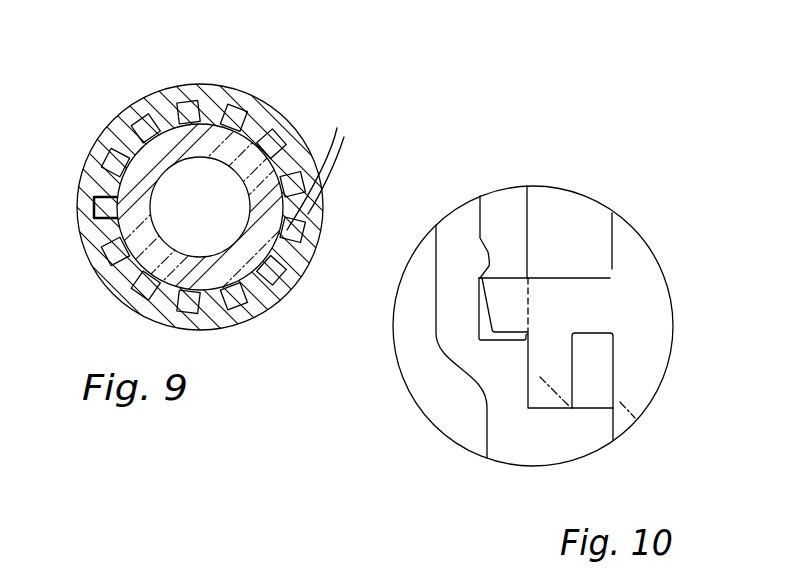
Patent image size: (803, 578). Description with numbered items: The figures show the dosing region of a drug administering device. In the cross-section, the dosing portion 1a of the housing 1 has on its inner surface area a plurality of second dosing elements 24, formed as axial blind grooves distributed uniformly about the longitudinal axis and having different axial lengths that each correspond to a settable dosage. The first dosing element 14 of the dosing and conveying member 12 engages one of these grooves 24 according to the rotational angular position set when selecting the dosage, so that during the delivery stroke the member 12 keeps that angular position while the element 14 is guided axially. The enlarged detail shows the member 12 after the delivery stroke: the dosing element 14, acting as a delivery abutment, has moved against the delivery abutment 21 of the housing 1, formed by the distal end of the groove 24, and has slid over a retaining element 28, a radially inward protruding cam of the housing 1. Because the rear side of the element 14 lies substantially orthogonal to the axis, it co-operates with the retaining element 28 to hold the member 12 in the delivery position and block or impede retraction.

In FIG. 9, the dosing portion 1a is at (164, 102).
In FIG. 9, the dosing and conveying member 12 is at (243, 150).
In FIG. 10, the dosing and conveying member 12 is at (600, 302).
In FIG. 9, the first dosing element 14 is at (95, 208).
In FIG. 10, the first dosing element 14 is at (500, 297).
In FIG. 9, the second dosing elements 24 is at (331, 165).
In FIG. 10, the retaining elements 28 is at (490, 250).
In FIG. 10, the delivery abutment 21 is at (507, 342).
In FIG. 10, the housing 1 is at (497, 415).